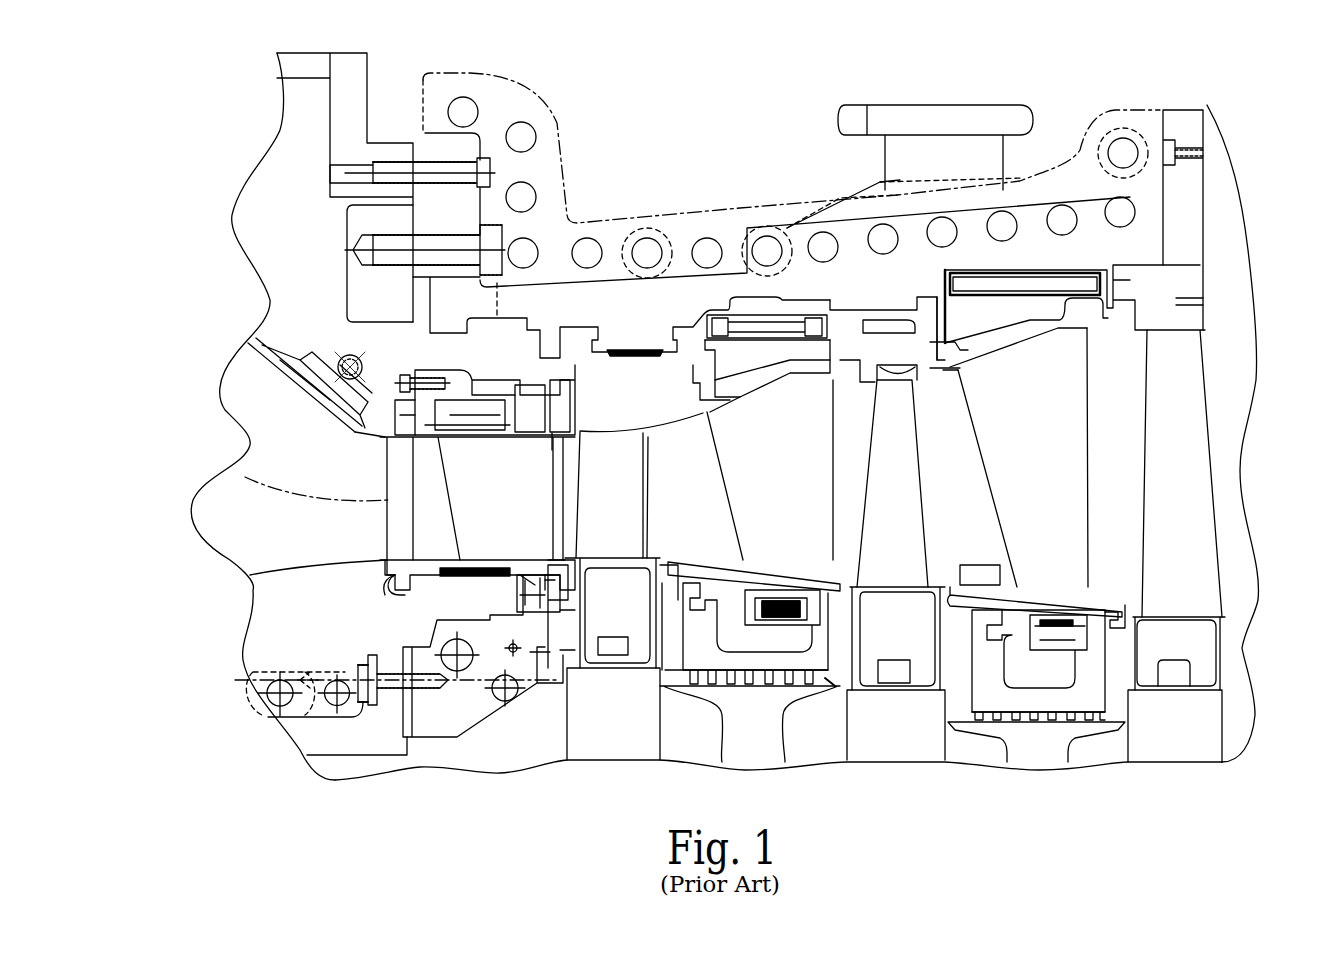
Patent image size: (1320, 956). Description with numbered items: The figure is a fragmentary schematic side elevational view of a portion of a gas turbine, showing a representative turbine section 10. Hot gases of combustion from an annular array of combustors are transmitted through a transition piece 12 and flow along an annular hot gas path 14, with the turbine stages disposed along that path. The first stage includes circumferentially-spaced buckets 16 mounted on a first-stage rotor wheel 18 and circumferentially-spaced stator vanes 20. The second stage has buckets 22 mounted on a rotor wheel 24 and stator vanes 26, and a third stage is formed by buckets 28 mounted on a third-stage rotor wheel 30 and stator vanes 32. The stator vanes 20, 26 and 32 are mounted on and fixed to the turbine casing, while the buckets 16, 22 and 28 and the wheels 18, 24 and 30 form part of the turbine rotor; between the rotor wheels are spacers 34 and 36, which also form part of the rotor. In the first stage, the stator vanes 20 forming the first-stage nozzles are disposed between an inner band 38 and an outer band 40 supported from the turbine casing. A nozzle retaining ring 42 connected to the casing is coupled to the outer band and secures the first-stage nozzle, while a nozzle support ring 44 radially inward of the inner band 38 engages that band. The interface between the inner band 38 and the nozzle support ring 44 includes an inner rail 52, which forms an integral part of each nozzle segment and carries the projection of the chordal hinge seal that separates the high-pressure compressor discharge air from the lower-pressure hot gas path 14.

The turbine section 10 is at (643, 145).
The transition piece 12 is at (258, 426).
The hot gas path 14 is at (677, 430).
The first-stage buckets 16 is at (645, 466).
The first-stage rotor wheel 18 is at (593, 745).
The first-stage stator vanes 20 is at (463, 470).
The second-stage buckets 22 is at (913, 473).
The second-stage rotor wheel 24 is at (898, 745).
The second-stage stator vanes 26 is at (768, 452).
The third-stage buckets 28 is at (1202, 467).
The third-stage rotor wheel 30 is at (1180, 750).
The third-stage stator vanes 32 is at (1030, 449).
The spacer 34 is at (757, 745).
The spacer 36 is at (352, 632).
The inner band 38 is at (482, 562).
The outer band 40 is at (515, 437).
The nozzle retaining ring 42 is at (454, 378).
The nozzle support ring 44 is at (543, 612).
The inner rail 52 is at (522, 576).